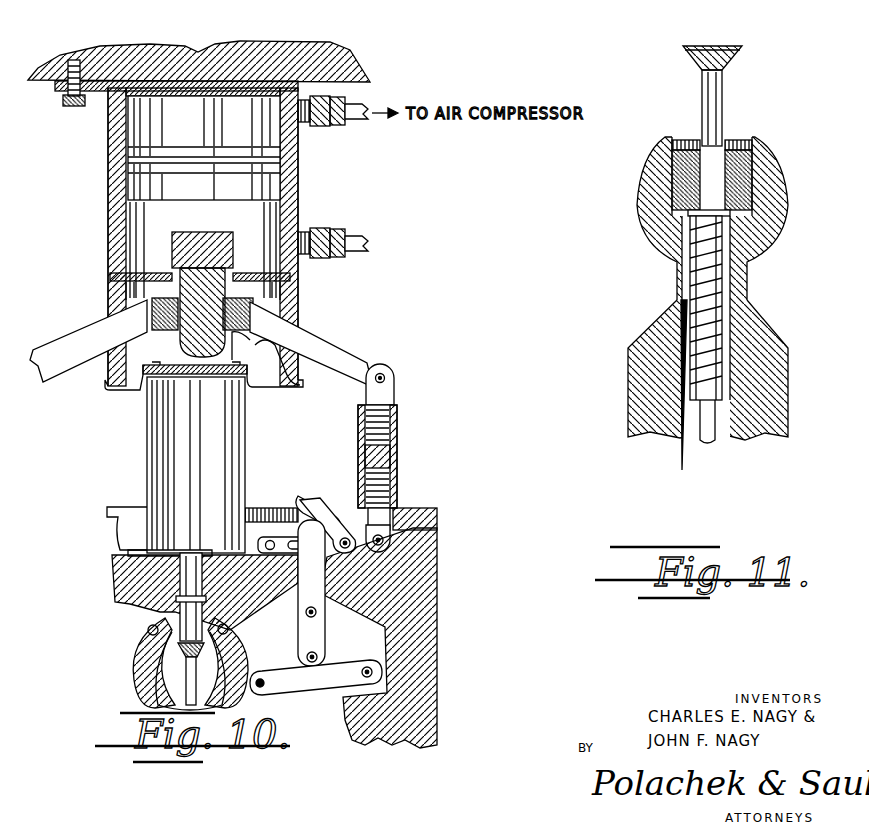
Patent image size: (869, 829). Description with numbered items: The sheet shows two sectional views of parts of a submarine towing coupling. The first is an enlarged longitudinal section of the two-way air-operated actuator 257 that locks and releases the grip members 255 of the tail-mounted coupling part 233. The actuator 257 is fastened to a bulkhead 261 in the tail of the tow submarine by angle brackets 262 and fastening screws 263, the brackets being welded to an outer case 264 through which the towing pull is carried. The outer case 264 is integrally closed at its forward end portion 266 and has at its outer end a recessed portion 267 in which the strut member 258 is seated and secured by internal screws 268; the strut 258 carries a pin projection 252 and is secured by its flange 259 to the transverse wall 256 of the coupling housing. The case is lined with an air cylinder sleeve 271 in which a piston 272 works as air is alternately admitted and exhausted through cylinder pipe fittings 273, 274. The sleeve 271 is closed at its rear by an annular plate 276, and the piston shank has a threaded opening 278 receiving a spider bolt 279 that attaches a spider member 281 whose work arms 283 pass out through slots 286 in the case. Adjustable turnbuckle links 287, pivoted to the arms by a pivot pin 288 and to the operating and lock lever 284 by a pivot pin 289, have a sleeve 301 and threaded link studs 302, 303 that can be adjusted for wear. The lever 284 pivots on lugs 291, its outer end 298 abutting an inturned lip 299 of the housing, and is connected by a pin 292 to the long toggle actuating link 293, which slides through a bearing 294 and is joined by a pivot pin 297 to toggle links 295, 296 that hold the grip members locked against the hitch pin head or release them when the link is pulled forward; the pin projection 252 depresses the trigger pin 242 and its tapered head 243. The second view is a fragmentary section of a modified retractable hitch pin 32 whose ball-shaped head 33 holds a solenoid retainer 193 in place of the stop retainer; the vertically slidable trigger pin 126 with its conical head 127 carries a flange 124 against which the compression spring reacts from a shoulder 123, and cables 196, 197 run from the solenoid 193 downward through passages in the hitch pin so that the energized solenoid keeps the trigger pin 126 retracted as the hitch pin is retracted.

In FIG. 10, the bulkhead 261 is at (195, 62).
In FIG. 10, the angle brackets 262 is at (107, 112).
In FIG. 10, the fastening screws 263 is at (72, 106).
In FIG. 10, the outer case 264 is at (297, 190).
In FIG. 10, the two-way air-operated actuator 257 is at (108, 207).
In FIG. 10, the air cylinder sleeve 271 is at (297, 153).
In FIG. 10, the forward end portion 266 is at (262, 98).
In FIG. 10, the piston 272 is at (215, 165).
In FIG. 10, the cylinder pipe fitting 273 is at (333, 124).
In FIG. 10, the cylinder pipe fitting 274 is at (323, 260).
In FIG. 10, the spider bolt 279 is at (185, 220).
In FIG. 10, the annular plate 276 is at (112, 295).
In FIG. 10, the threaded opening 278 is at (112, 318).
In FIG. 10, the slots 286 is at (293, 308).
In FIG. 10, the work arms 283 is at (88, 352).
In FIG. 10, the spider member 281 is at (143, 375).
In FIG. 10, the internal screws 268 is at (288, 384).
In FIG. 10, the recessed portion 267 is at (262, 380).
In FIG. 10, the pivot pin 288 is at (382, 372).
In FIG. 10, the adjustable turnbuckle link 287 is at (430, 463).
In FIG. 10, the threaded link stud 302 is at (397, 410).
In FIG. 10, the sleeve 301 is at (398, 446).
In FIG. 10, the threaded link stud 303 is at (397, 482).
In FIG. 10, the outer end 298 is at (395, 541).
In FIG. 10, the inturned lip 299 is at (405, 507).
In FIG. 10, the coupling part 233 is at (418, 645).
In FIG. 10, the strut member 258 is at (182, 459).
In FIG. 10, the flange 259 is at (203, 553).
In FIG. 10, the transverse wall 256 is at (180, 604).
In FIG. 10, the pin projection 252 is at (180, 617).
In FIG. 10, the trigger pin 242 is at (180, 666).
In FIG. 10, the tapered head 243 is at (240, 655).
In FIG. 10, the grip members 255 is at (138, 690).
In FIG. 10, the pin 292 is at (306, 502).
In FIG. 10, the operating and lock lever 284 is at (341, 510).
In FIG. 10, the pivot pin 289 is at (380, 541).
In FIG. 10, the lugs 291 is at (380, 579).
In FIG. 10, the toggle actuating link 293 is at (318, 600).
In FIG. 10, the pivot pin 297 is at (322, 640).
In FIG. 10, the bearing 294 is at (318, 583).
In FIG. 10, the toggle link 295 is at (279, 685).
In FIG. 10, the toggle link 296 is at (352, 668).
In FIG. 11, the ball-shaped head 33 is at (640, 197).
In FIG. 11, the hitch pin 32 is at (637, 380).
In FIG. 11, the solenoid retainer 193 is at (735, 143).
In FIG. 11, the flange 124 is at (737, 218).
In FIG. 11, the shoulder 123 is at (725, 402).
In FIG. 11, the cable 197 is at (688, 457).
In FIG. 11, the cable 196 is at (673, 453).
In FIG. 11, the trigger pin 126 is at (722, 98).
In FIG. 11, the conical head 127 is at (722, 48).